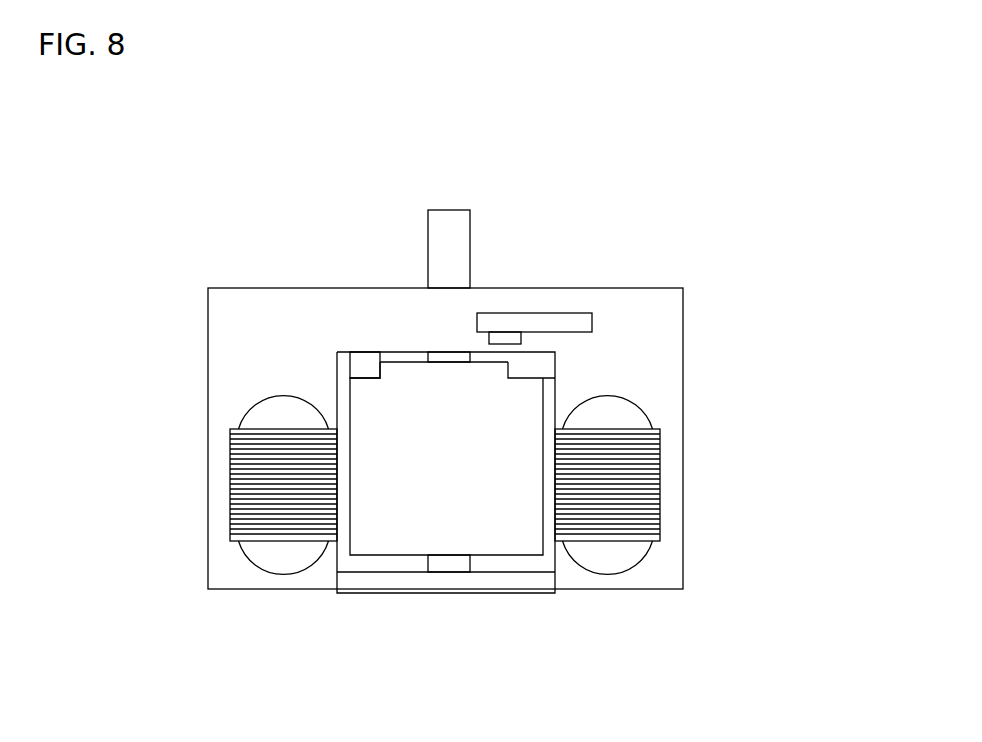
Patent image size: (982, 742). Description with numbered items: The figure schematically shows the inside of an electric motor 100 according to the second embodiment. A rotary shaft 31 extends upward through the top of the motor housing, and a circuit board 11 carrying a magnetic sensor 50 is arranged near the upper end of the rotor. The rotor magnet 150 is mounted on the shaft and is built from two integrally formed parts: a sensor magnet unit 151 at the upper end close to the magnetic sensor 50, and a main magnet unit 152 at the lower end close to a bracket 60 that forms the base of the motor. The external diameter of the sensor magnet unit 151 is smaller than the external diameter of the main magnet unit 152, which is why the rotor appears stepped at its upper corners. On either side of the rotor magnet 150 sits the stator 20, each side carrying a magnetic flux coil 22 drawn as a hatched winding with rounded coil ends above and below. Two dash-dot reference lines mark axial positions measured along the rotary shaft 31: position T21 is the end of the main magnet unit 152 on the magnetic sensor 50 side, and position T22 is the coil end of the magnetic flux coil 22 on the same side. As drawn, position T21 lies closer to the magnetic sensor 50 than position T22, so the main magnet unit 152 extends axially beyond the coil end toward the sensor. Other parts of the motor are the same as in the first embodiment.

The electric motor 100 is at (472, 693).
The rotary shaft 31 is at (465, 218).
The circuit board 11 is at (565, 313).
The magnetic sensor 50 is at (489, 339).
The rotor magnet 150 is at (350, 368).
The sensor magnet unit 151 is at (372, 365).
The main magnet unit 152 is at (372, 558).
The bracket 60 is at (412, 593).
The stator 20 is at (233, 551).
The magnetic flux coil 22 is at (246, 410).
The position of one end of the main magnet unit T21 is at (557, 377).
The position of one coil end of the magnetic flux coil T22 is at (600, 395).